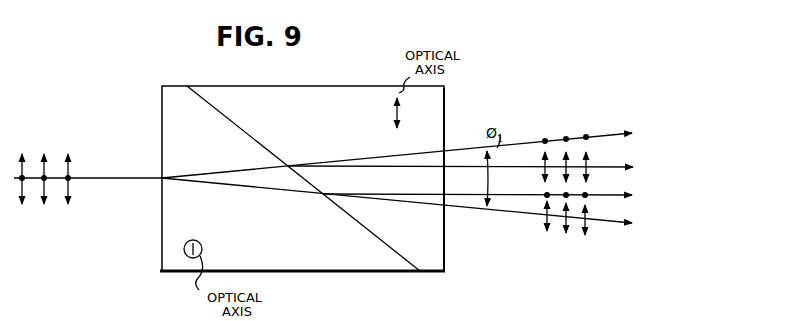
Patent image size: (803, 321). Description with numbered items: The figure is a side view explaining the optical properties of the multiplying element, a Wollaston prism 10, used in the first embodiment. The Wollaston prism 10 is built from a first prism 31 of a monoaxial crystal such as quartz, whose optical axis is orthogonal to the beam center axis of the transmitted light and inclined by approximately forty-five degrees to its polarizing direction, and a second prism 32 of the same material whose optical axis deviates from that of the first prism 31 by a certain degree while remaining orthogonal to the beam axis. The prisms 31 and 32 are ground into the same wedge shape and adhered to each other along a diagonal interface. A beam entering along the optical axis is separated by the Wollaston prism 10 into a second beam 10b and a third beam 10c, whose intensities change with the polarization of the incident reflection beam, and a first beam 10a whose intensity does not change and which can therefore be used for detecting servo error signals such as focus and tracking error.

The multiplying element (Wollaston prism) 10 is at (360, 279).
The first beam 10a is at (645, 160).
The second beam 10b is at (612, 132).
The third beam 10c is at (617, 227).
The first prism 31 is at (268, 237).
The second prism 32 is at (319, 120).